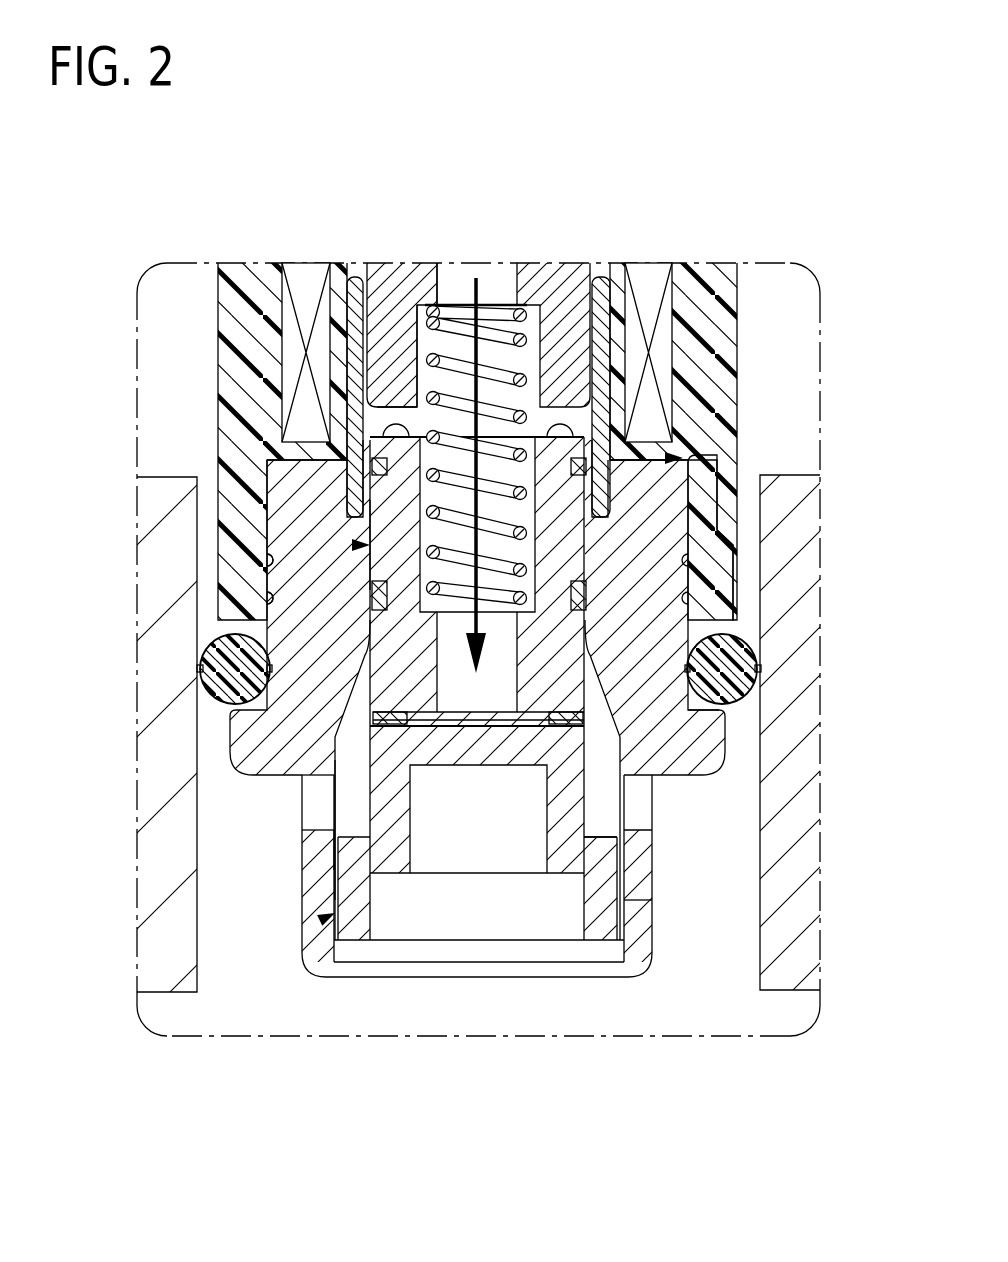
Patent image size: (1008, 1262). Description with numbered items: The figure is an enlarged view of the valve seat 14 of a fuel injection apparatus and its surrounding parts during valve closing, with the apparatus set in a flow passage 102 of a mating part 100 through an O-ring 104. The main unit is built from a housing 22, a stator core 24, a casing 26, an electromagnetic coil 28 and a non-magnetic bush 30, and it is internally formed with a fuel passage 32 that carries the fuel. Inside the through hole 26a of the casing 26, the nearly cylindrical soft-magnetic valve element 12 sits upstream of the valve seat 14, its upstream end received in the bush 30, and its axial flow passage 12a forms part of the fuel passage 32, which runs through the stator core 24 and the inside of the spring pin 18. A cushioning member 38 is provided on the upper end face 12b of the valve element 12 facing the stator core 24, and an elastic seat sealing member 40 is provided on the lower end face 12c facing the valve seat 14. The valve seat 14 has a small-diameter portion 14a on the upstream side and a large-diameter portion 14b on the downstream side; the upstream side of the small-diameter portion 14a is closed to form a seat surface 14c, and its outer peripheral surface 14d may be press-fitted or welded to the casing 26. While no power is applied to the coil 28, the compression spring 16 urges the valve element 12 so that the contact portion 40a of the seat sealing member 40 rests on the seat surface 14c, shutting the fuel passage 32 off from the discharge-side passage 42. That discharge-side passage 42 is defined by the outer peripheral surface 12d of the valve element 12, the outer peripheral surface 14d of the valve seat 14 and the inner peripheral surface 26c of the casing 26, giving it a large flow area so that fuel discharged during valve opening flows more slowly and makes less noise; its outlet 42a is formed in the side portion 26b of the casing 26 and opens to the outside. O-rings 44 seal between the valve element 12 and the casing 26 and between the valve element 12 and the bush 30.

The valve element 12 is at (300, 535).
The flow passage 12a is at (268, 598).
The upper end face 12b is at (575, 392).
The lower end face 12c is at (530, 950).
The outer peripheral surface 12d is at (352, 545).
The valve seat 14 is at (322, 918).
The small-diameter portion 14a is at (390, 783).
The large-diameter portion 14b is at (347, 866).
The seat surface 14c is at (330, 708).
The outer peripheral surface 14d is at (658, 848).
The compression spring 16 is at (430, 313).
The spring pin 18 is at (521, 280).
The housing 22 is at (702, 278).
The stator core 24 is at (568, 285).
The casing 26 is at (690, 448).
The through hole 26a is at (760, 668).
The side portion 26b is at (655, 906).
The inner peripheral surface 26c is at (692, 716).
The electromagnetic coil 28 is at (301, 278).
The non-magnetic bush 30 is at (357, 280).
The fuel passage 32 is at (169, 596).
The cushioning member 38 is at (420, 410).
The seat sealing member 40 is at (505, 780).
The contact portion 40a is at (445, 900).
The discharge-side passage 42 is at (603, 773).
The outlet 42a is at (640, 808).
The O-rings 44 is at (585, 462).
The mating part 100 is at (182, 518).
The flow passage 102 is at (266, 890).
The O-ring 104 is at (214, 668).